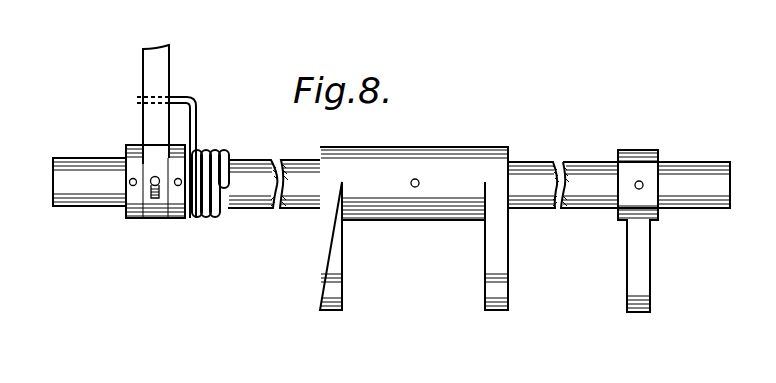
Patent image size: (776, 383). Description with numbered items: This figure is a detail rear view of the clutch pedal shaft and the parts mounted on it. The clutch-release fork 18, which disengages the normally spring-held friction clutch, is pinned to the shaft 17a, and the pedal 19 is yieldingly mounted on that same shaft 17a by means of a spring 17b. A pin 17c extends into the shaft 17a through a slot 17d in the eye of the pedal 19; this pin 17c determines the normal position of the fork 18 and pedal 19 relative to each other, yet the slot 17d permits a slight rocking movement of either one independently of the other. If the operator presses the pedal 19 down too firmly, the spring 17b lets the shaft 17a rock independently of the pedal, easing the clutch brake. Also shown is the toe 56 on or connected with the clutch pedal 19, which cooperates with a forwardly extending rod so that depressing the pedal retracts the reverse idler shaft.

The shaft 17a is at (532, 173).
The spring 17b is at (192, 130).
The pin 17c is at (151, 180).
The slot 17d is at (156, 199).
The clutch-release fork 18 is at (418, 150).
The pedal 19 is at (146, 63).
The toe 56 is at (645, 257).